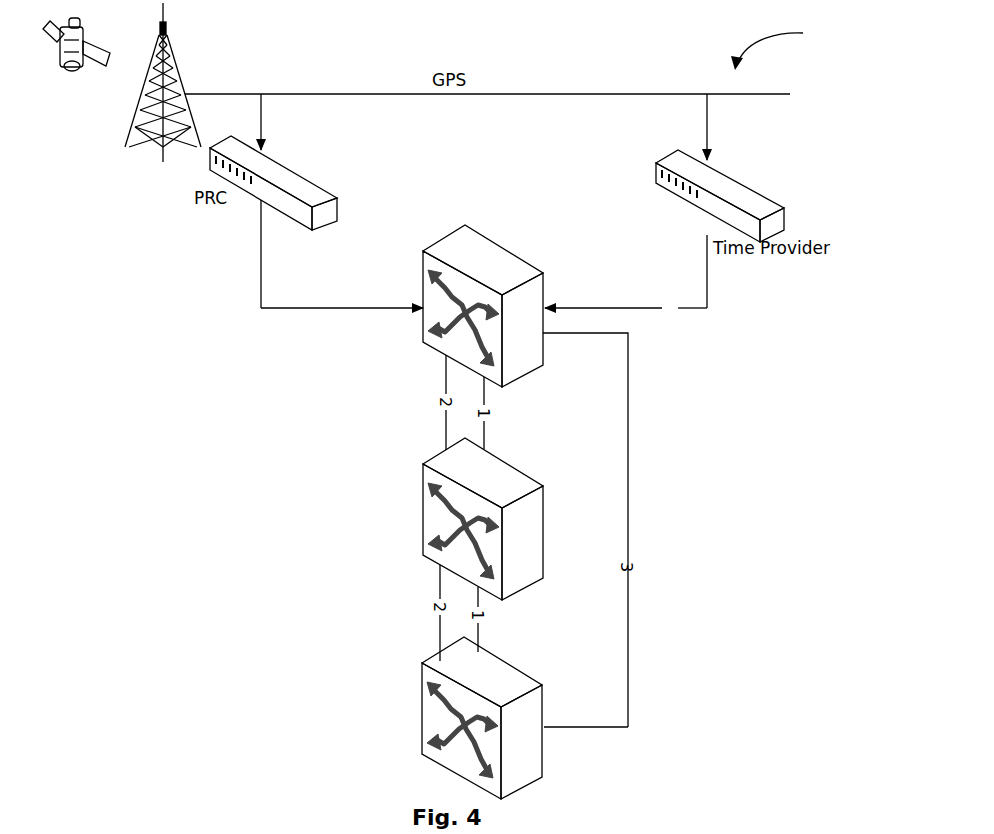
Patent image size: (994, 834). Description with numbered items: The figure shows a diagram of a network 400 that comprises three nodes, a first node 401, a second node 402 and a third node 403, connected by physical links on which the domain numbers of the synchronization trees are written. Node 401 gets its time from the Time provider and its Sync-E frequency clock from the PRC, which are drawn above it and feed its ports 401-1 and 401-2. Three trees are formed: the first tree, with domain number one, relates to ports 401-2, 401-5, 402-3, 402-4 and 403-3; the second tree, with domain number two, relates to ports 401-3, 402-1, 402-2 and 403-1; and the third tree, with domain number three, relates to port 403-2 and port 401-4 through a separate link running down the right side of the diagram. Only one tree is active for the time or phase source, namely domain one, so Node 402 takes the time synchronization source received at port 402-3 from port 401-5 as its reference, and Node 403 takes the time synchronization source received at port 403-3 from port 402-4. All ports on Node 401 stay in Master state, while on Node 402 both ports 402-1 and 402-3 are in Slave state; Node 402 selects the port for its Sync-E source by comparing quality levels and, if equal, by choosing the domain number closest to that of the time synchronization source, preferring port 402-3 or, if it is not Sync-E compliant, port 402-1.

The network 400 is at (770, 41).
The node 401 is at (483, 306).
The node 402 is at (483, 519).
The node 403 is at (482, 718).
The port 401-1 is at (342, 296).
The port 401-2 is at (626, 300).
The port 401-3 is at (421, 386).
The port 401-4 is at (585, 521).
The port 401-5 is at (510, 403).
The port 402-1 is at (421, 437).
The port 402-2 is at (413, 594).
The port 402-3 is at (510, 442).
The port 402-4 is at (509, 610).
The port 403-1 is at (416, 643).
The port 403-2 is at (586, 742).
The port 403-3 is at (506, 643).